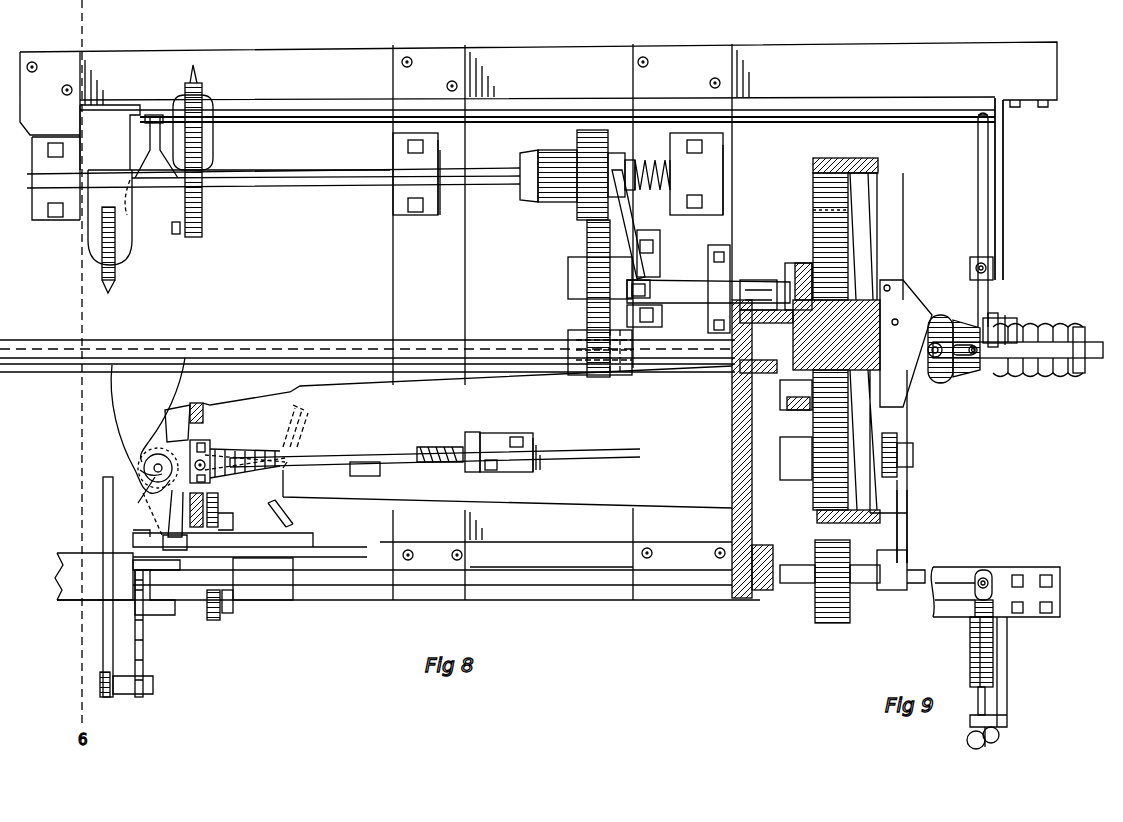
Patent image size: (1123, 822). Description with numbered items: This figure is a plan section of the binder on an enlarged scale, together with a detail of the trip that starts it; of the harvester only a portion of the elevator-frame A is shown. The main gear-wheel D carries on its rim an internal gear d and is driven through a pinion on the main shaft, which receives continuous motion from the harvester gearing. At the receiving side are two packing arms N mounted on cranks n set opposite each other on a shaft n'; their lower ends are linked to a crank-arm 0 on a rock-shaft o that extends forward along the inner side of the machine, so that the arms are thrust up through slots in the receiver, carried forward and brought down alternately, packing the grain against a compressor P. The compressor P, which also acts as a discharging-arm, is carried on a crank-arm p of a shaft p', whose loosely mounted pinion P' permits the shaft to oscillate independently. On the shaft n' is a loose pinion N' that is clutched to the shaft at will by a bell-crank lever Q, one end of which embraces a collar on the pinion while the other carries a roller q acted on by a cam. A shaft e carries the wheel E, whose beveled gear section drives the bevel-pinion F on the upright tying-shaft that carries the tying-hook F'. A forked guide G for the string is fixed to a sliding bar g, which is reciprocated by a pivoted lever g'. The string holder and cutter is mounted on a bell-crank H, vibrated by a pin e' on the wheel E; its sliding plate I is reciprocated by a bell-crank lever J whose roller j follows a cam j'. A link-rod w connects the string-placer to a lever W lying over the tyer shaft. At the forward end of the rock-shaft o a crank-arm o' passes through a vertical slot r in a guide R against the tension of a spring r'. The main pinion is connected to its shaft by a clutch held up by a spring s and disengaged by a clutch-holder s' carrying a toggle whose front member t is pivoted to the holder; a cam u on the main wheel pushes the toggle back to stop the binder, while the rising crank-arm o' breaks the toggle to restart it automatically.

In FIG. 8, the elevator-frame A is at (485, 437).
In FIG. 8, the packing arms N is at (157, 182).
In FIG. 8, the cranks n is at (235, 185).
In FIG. 8, the crank-arm 0 is at (152, 114).
In FIG. 8, the rock-shaft o is at (567, 129).
In FIG. 9, the rock-shaft o is at (951, 577).
In FIG. 8, the packing-arm shaft n' is at (273, 168).
In FIG. 8, the loose pinion N' is at (595, 253).
In FIG. 8, the bell-crank lever Q is at (701, 236).
In FIG. 8, the vertical slot r is at (435, 391).
In FIG. 9, the vertical slot r is at (982, 569).
In FIG. 8, the wheel E is at (200, 403).
In FIG. 8, the forked guide G is at (125, 414).
In FIG. 8, the tying-hook F' is at (123, 470).
In FIG. 8, the bevel-pinion F is at (151, 507).
In FIG. 8, the bell-crank H is at (168, 519).
In FIG. 8, the spring r' is at (237, 453).
In FIG. 9, the spring r' is at (970, 666).
In FIG. 8, the link-rod w is at (302, 428).
In FIG. 8, the lever W is at (290, 515).
In FIG. 8, the sliding bar g is at (435, 447).
In FIG. 8, the pivoted lever g' is at (365, 477).
In FIG. 8, the bell-crank lever J is at (313, 543).
In FIG. 8, the sliding plate I is at (180, 548).
In FIG. 8, the compressor P is at (92, 587).
In FIG. 8, the crank-arm p is at (94, 576).
In FIG. 8, the compressor shaft p' is at (507, 589).
In FIG. 8, the roller j is at (208, 613).
In FIG. 8, the cam j' is at (231, 610).
In FIG. 8, the cam u is at (836, 343).
In FIG. 8, the roller q is at (790, 268).
In FIG. 8, the main gear-wheel D is at (841, 160).
In FIG. 8, the internal gear d is at (818, 228).
In FIG. 8, the crank-pin e' is at (902, 447).
In FIG. 8, the shaft e is at (915, 455).
In FIG. 8, the pinion P' is at (852, 597).
In FIG. 8, the crank-arm o' is at (975, 220).
In FIG. 9, the crank-arm o' is at (970, 603).
In FIG. 8, the guide R is at (1003, 272).
In FIG. 9, the guide R is at (1007, 658).
In FIG. 8, the front toggle member t is at (1088, 342).
In FIG. 8, the clutch-holder s' is at (1030, 353).
In FIG. 8, the spring s is at (1038, 357).